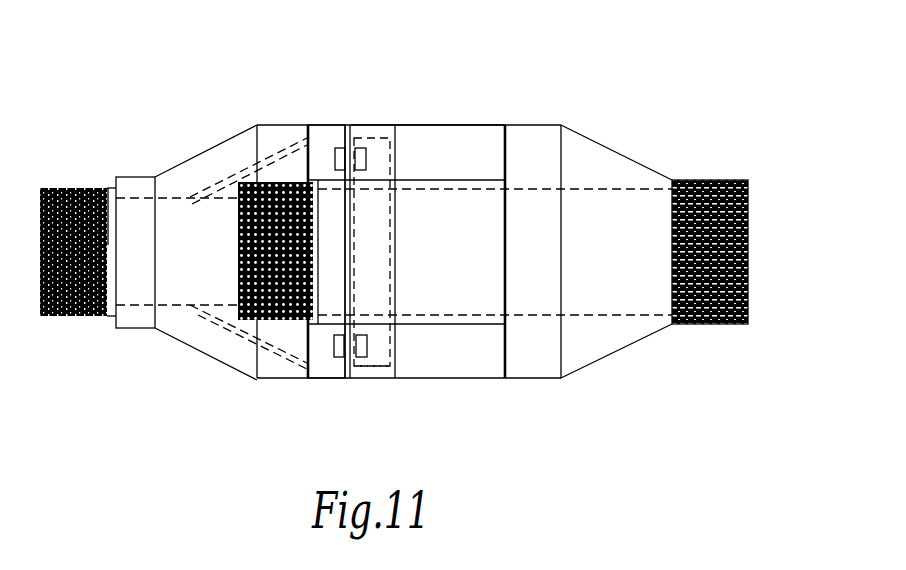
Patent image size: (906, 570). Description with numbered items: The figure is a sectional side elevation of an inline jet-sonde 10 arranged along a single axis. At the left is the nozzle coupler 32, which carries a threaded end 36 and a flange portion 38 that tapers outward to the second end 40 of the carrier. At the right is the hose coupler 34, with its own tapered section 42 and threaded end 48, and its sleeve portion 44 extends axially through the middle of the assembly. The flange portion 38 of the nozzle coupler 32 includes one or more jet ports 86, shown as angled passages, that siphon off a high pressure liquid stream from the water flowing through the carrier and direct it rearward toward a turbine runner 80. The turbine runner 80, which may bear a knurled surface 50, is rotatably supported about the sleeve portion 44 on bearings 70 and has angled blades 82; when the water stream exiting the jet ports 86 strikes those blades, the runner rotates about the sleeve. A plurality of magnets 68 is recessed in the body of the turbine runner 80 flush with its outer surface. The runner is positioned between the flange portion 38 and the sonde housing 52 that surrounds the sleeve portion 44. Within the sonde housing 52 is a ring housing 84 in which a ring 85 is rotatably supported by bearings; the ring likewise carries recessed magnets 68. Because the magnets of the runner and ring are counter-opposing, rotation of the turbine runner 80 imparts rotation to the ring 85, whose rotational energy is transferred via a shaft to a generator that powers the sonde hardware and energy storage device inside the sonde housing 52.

The inline jet-sonde 10 is at (213, 40).
The nozzle coupler 32 is at (156, 352).
The hose coupler 34 is at (628, 140).
The first threaded end 36 is at (83, 192).
The flange portion 38 is at (265, 127).
The second end 40 is at (280, 322).
The tapered section of second body 42 is at (597, 348).
The sleeve portion 44 is at (483, 325).
The second threaded end 48 is at (723, 183).
The knurled surface 50 is at (232, 208).
The sonde housing 52 is at (460, 107).
The magnets 68 is at (340, 148).
The bearings 70 is at (307, 178).
The turbine runner 80 is at (350, 108).
The blades 82 is at (328, 130).
The ring housing 84 is at (382, 165).
The ring 85 is at (382, 346).
The jet ports 86 is at (220, 152).